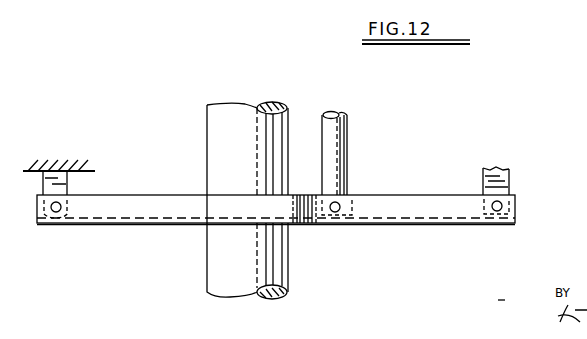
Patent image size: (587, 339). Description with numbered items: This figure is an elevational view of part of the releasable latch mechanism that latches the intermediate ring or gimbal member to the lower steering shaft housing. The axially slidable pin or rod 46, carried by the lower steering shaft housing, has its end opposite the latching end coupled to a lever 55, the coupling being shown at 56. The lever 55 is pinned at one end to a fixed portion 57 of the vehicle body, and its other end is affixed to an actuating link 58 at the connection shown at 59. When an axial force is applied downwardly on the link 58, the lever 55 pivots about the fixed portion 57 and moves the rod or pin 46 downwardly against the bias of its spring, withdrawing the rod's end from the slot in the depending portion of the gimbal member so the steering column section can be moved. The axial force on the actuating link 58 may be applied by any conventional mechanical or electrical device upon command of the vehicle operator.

The pin or rod 46 is at (335, 155).
The lever 55 is at (363, 225).
The coupling of rod to lever 56 is at (340, 205).
The fixed portion of the vehicle body 57 is at (68, 160).
The actuating link 58 is at (487, 187).
The connection of link to lever 59 is at (496, 212).